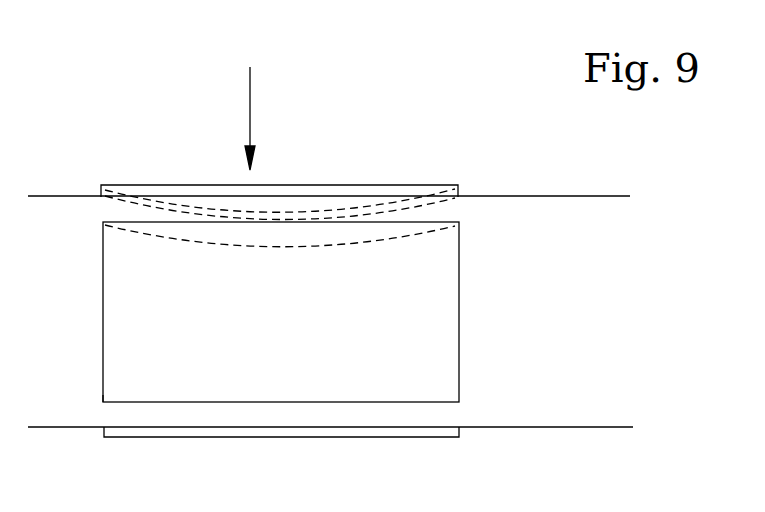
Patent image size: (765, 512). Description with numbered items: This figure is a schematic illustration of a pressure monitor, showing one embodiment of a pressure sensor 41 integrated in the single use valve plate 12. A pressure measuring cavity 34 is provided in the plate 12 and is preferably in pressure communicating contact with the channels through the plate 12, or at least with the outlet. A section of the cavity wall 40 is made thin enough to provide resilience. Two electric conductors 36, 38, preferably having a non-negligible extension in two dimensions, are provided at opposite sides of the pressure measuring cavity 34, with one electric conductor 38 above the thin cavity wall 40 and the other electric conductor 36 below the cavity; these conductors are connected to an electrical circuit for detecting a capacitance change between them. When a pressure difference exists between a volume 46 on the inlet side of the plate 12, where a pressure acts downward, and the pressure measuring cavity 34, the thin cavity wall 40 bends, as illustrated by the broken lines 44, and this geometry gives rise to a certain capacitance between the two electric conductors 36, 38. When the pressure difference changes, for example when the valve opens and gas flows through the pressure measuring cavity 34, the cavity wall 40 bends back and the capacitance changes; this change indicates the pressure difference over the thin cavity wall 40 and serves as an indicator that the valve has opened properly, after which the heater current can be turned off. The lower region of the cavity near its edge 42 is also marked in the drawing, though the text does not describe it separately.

The single use valve plate 12 is at (610, 212).
The pressure measuring cavity 34 is at (118, 338).
The electric conductor 36 is at (278, 432).
The electric conductor 38 is at (398, 186).
The cavity wall 40 is at (117, 213).
The pressure sensor 41 is at (486, 147).
The lower block edge 42 is at (113, 415).
The broken lines 44 is at (267, 247).
The volume 46 is at (170, 120).